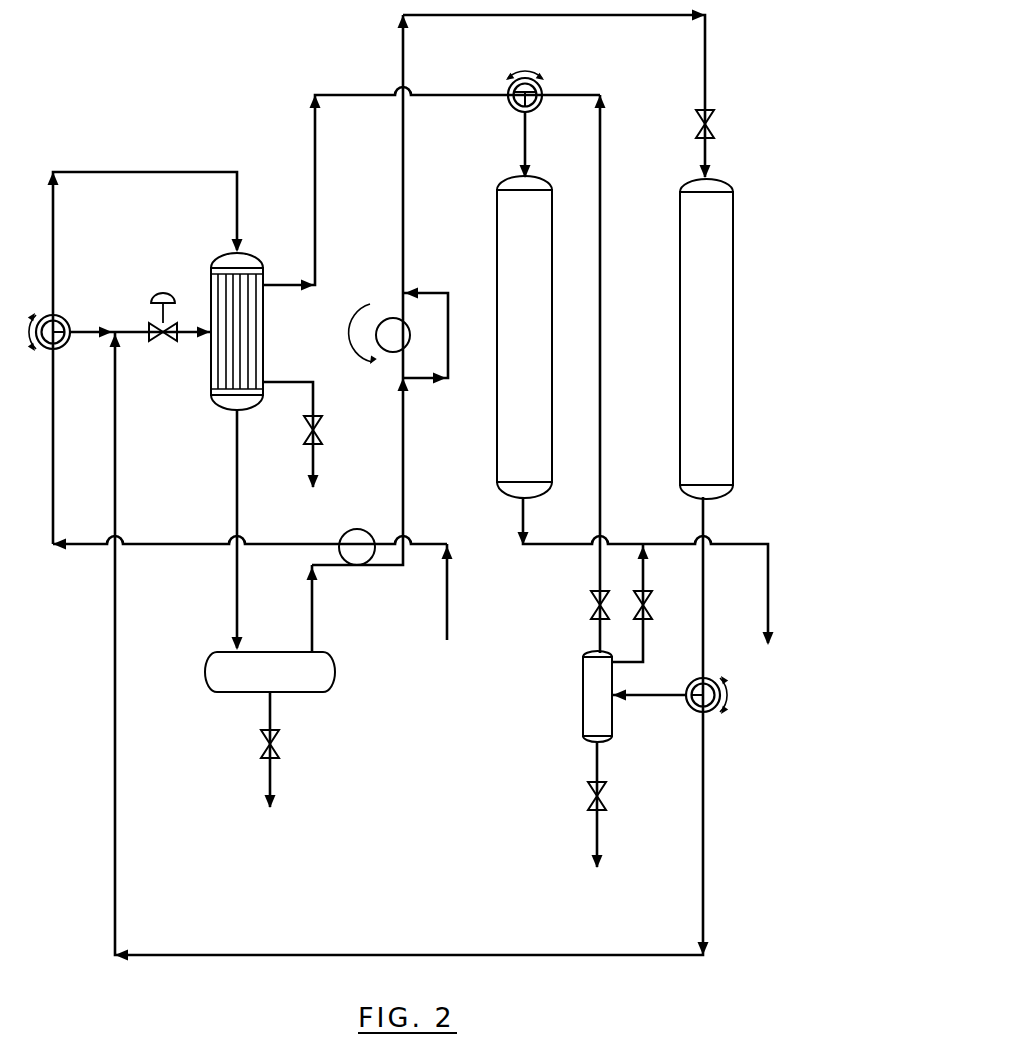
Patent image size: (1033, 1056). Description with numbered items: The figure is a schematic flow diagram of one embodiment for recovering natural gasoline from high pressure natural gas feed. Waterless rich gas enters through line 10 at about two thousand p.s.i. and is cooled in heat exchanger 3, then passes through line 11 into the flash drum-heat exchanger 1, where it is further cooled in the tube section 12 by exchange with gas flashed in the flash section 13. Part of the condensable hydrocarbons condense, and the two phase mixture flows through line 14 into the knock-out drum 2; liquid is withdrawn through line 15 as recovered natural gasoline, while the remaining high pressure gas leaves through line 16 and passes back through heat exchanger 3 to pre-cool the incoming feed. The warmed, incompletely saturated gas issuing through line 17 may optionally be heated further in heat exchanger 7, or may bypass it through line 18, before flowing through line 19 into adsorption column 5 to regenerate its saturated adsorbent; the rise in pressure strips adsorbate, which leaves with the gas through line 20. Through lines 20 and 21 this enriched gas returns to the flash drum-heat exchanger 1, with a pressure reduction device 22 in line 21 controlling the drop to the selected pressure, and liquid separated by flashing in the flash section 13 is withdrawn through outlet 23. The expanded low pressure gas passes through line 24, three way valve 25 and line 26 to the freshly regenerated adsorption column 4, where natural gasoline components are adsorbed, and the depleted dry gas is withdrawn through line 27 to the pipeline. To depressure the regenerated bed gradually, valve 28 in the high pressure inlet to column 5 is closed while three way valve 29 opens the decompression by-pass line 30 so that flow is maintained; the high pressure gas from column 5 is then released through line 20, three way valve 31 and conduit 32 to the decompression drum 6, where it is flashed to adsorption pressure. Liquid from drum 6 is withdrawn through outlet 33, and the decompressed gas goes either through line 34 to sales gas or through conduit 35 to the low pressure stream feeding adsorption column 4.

The flash drum-heat exchanger 1 is at (238, 308).
The knock-out drum 2 is at (243, 693).
The heat exchanger 3 is at (357, 575).
The adsorption column 4 is at (497, 240).
The adsorption column 5 is at (733, 247).
The decompression drum 6 is at (583, 695).
The heat exchanger 7 is at (378, 330).
The line 10 is at (452, 618).
The line 11 is at (139, 170).
The tube section 12 is at (252, 272).
The flash section 13 is at (259, 342).
The line 14 is at (232, 588).
The line 15 is at (272, 787).
The line 16 is at (308, 613).
The line 17 is at (403, 463).
The line 18 is at (448, 338).
The line 19 is at (407, 175).
The line 20 is at (118, 458).
The line 21 is at (133, 328).
The pressure reduction device 22 is at (163, 339).
The outlet 23 is at (315, 397).
The line 24 is at (315, 150).
The three way valve 25 is at (542, 88).
The line 26 is at (530, 147).
The line 27 is at (518, 522).
The valve 28 is at (712, 123).
The three way valve 29 is at (62, 318).
The decompression by-pass line 30 is at (88, 341).
The three way valve 31 is at (710, 715).
The conduit 32 is at (652, 702).
The outlet 33 is at (593, 830).
The line 34 is at (645, 648).
The conduit 35 is at (603, 367).